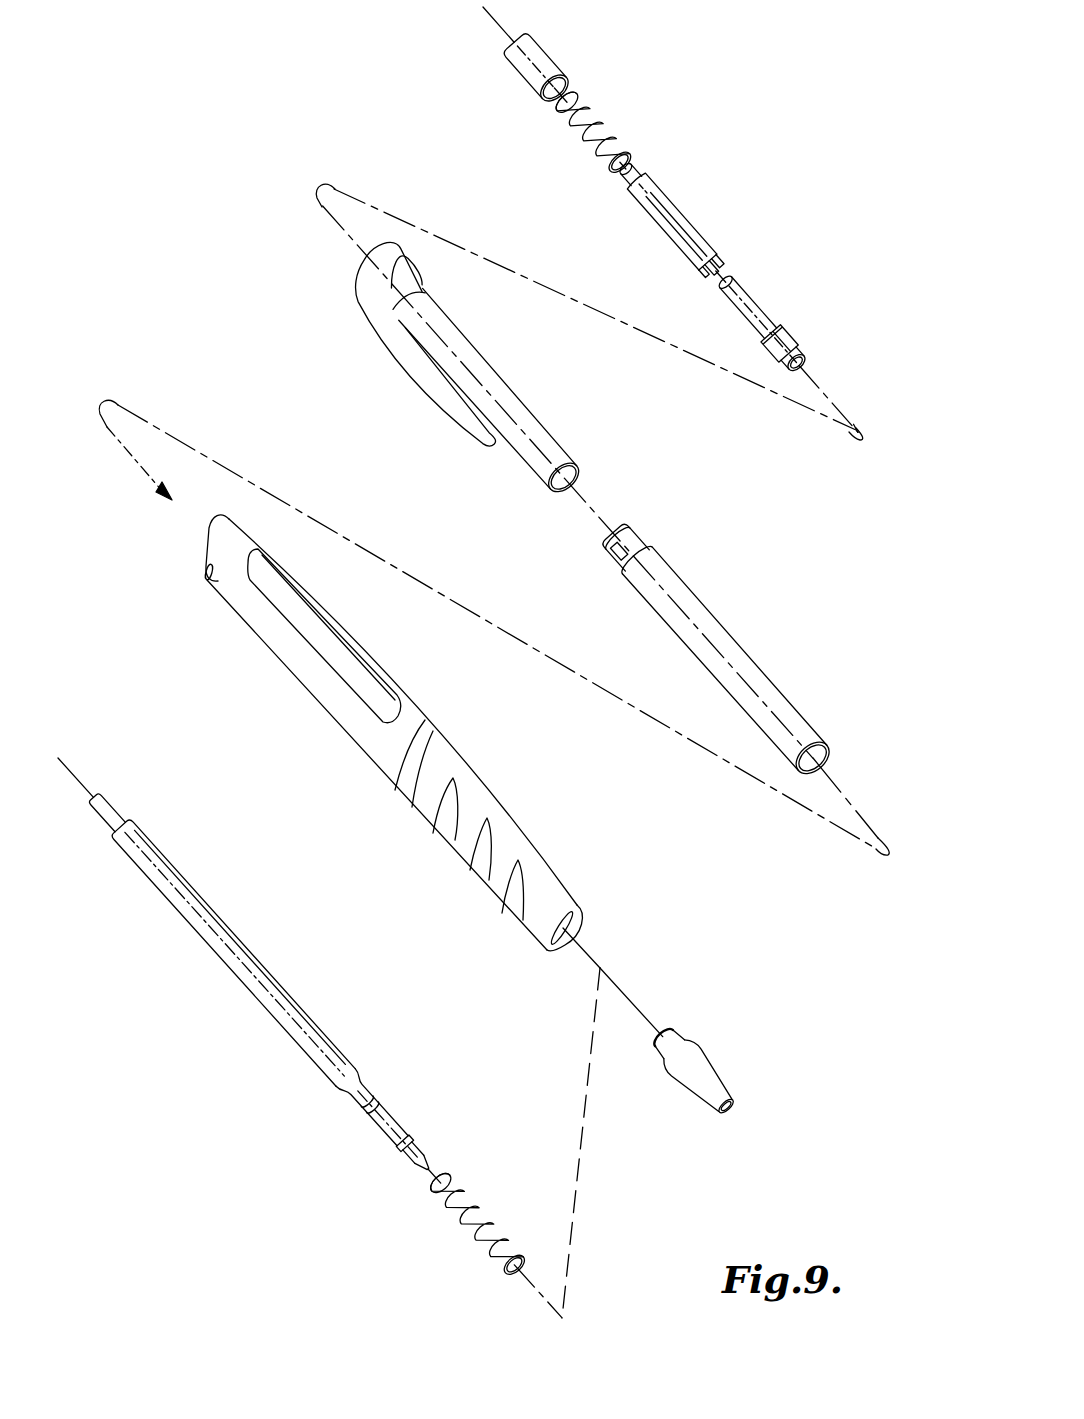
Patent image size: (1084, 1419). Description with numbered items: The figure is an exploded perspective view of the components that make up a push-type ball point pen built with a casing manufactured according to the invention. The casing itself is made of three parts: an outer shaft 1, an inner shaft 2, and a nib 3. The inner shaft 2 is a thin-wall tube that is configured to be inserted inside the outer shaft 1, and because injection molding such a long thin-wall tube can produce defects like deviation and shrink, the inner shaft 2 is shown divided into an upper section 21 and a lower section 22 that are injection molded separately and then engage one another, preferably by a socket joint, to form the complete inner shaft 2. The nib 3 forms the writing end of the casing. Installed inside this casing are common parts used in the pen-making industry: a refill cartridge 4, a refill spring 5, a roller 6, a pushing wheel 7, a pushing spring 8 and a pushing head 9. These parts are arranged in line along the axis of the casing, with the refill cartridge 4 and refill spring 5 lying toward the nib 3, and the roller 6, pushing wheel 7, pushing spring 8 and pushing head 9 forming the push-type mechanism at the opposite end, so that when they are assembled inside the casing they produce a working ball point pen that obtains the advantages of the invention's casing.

The outer shaft 1 is at (350, 763).
The inner shaft 2 is at (629, 455).
The nib 3 is at (698, 1077).
The refill cartridge 4 is at (278, 1003).
The refill spring 5 is at (460, 1228).
The roller 6 is at (795, 342).
The pushing wheel 7 is at (677, 213).
The pushing spring 8 is at (605, 115).
The pushing head 9 is at (540, 57).
The upper section 21 is at (530, 418).
The lower section 22 is at (730, 650).